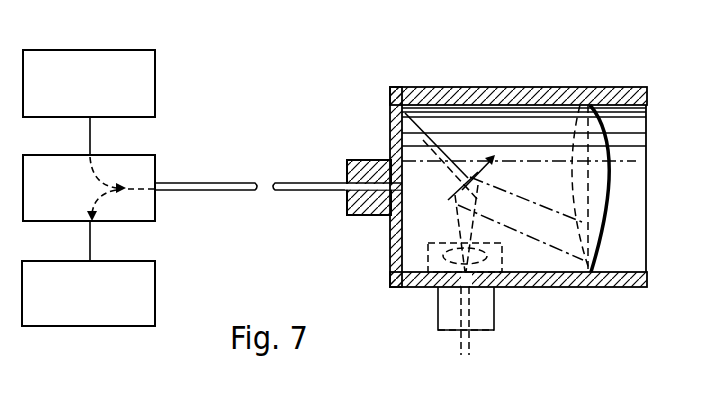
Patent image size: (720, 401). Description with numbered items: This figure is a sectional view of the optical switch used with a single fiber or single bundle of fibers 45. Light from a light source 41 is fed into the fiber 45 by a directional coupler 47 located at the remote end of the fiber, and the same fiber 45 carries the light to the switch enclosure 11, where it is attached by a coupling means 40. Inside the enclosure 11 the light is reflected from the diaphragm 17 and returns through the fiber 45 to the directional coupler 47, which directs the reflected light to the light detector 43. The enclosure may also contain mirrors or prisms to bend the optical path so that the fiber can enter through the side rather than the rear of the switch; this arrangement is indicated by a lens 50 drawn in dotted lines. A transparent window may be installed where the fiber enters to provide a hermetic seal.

The light source 41 is at (137, 50).
The directional coupler 47 is at (149, 169).
The light detector 43 is at (145, 326).
The single fiber or single bundle of fibers 45 is at (327, 196).
The enclosure 11 is at (578, 83).
The coupling means 40 is at (507, 125).
The diaphragm 17 is at (603, 237).
The lens 50 is at (428, 291).